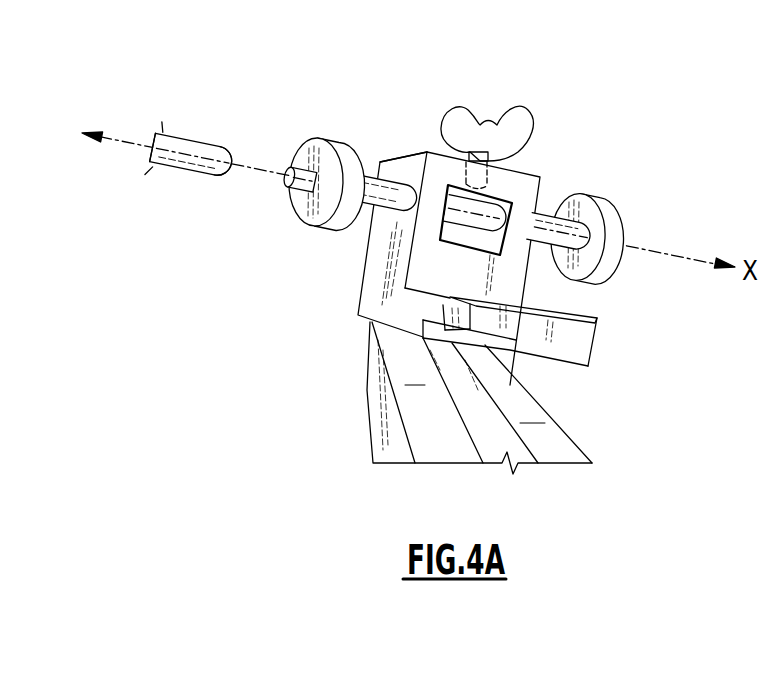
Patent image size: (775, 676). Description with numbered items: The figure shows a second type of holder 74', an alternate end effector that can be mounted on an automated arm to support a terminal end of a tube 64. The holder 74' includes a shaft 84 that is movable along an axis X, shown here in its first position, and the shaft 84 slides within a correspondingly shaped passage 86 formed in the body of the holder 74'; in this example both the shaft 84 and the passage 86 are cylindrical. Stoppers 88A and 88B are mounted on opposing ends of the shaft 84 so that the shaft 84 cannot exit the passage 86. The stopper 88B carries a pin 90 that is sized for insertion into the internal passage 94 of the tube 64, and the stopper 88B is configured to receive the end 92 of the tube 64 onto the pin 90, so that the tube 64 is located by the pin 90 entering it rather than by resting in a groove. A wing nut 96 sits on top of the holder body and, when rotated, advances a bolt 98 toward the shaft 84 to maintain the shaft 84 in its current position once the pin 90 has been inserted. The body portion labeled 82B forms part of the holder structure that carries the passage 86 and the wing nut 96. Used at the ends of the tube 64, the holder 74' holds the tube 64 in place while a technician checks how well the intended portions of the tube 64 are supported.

The holder 74' is at (408, 149).
The internal passage 94 is at (192, 143).
The tube 64 is at (170, 168).
The end 92 is at (230, 191).
The stopper 88B is at (331, 156).
The pin 90 is at (311, 178).
The passage 86 is at (414, 166).
The mounting bracket side 82B is at (373, 284).
The wing nut 96 is at (517, 112).
The bolt 98 is at (502, 157).
The shaft 84 is at (543, 220).
The stopper 88A is at (618, 218).